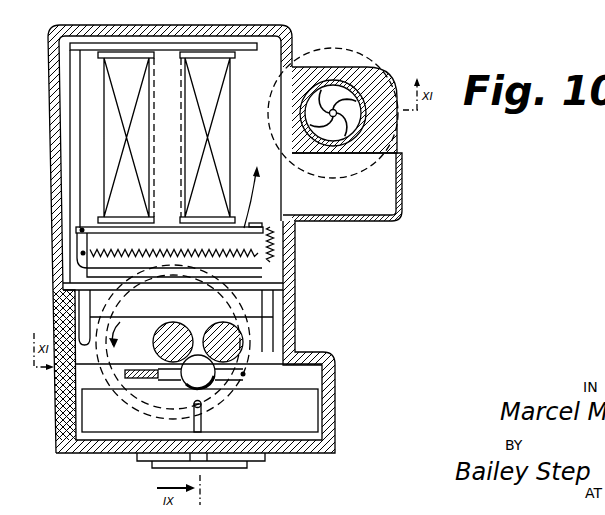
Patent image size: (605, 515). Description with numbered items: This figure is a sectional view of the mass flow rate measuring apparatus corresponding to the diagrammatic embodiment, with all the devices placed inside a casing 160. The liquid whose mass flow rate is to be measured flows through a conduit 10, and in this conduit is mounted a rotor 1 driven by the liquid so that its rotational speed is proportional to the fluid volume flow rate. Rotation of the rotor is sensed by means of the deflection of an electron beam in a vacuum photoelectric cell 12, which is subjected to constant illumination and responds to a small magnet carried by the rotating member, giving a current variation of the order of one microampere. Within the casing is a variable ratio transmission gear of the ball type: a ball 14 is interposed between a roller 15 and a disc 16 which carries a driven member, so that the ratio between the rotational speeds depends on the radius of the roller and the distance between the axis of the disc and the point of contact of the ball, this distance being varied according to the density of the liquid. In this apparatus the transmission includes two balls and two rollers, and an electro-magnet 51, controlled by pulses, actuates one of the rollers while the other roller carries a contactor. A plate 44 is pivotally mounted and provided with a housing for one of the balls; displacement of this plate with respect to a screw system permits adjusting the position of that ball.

The casing 160 is at (287, 31).
The rotor 1 is at (338, 97).
The conduit 10 is at (354, 94).
The vacuum photoelectric cell 12 is at (348, 205).
The electro-magnet 51 is at (208, 82).
The roller 15 is at (170, 339).
The plate 44 is at (244, 374).
The disc 16 is at (93, 393).
The ball 14 is at (222, 391).